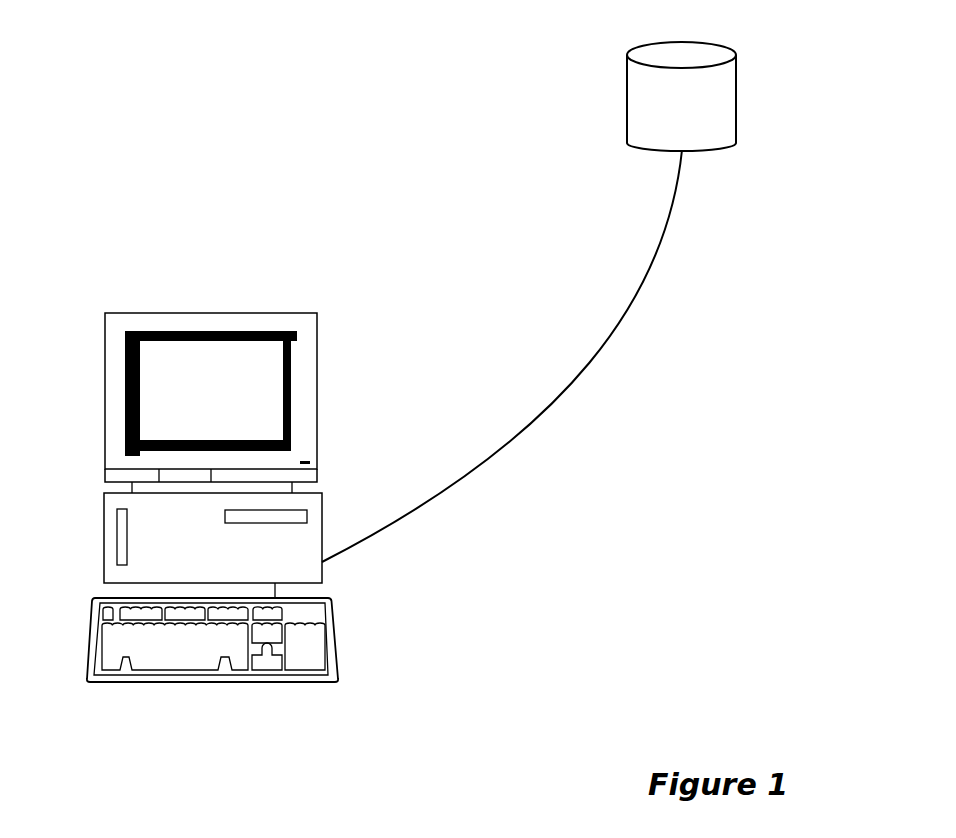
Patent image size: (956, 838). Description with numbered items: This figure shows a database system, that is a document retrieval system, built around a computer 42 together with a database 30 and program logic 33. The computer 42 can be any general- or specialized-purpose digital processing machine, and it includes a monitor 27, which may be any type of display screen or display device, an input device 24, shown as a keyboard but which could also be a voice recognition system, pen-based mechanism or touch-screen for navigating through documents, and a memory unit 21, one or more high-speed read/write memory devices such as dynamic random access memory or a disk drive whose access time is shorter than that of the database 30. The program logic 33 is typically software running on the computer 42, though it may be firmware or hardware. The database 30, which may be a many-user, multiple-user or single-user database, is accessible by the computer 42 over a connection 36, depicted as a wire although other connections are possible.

The memory unit 21 is at (119, 533).
The input device 24 is at (337, 638).
The monitor 27 is at (255, 403).
The database 30 is at (736, 90).
The program logic 33 is at (308, 511).
The connection 36 is at (603, 345).
The computer 42 is at (463, 222).